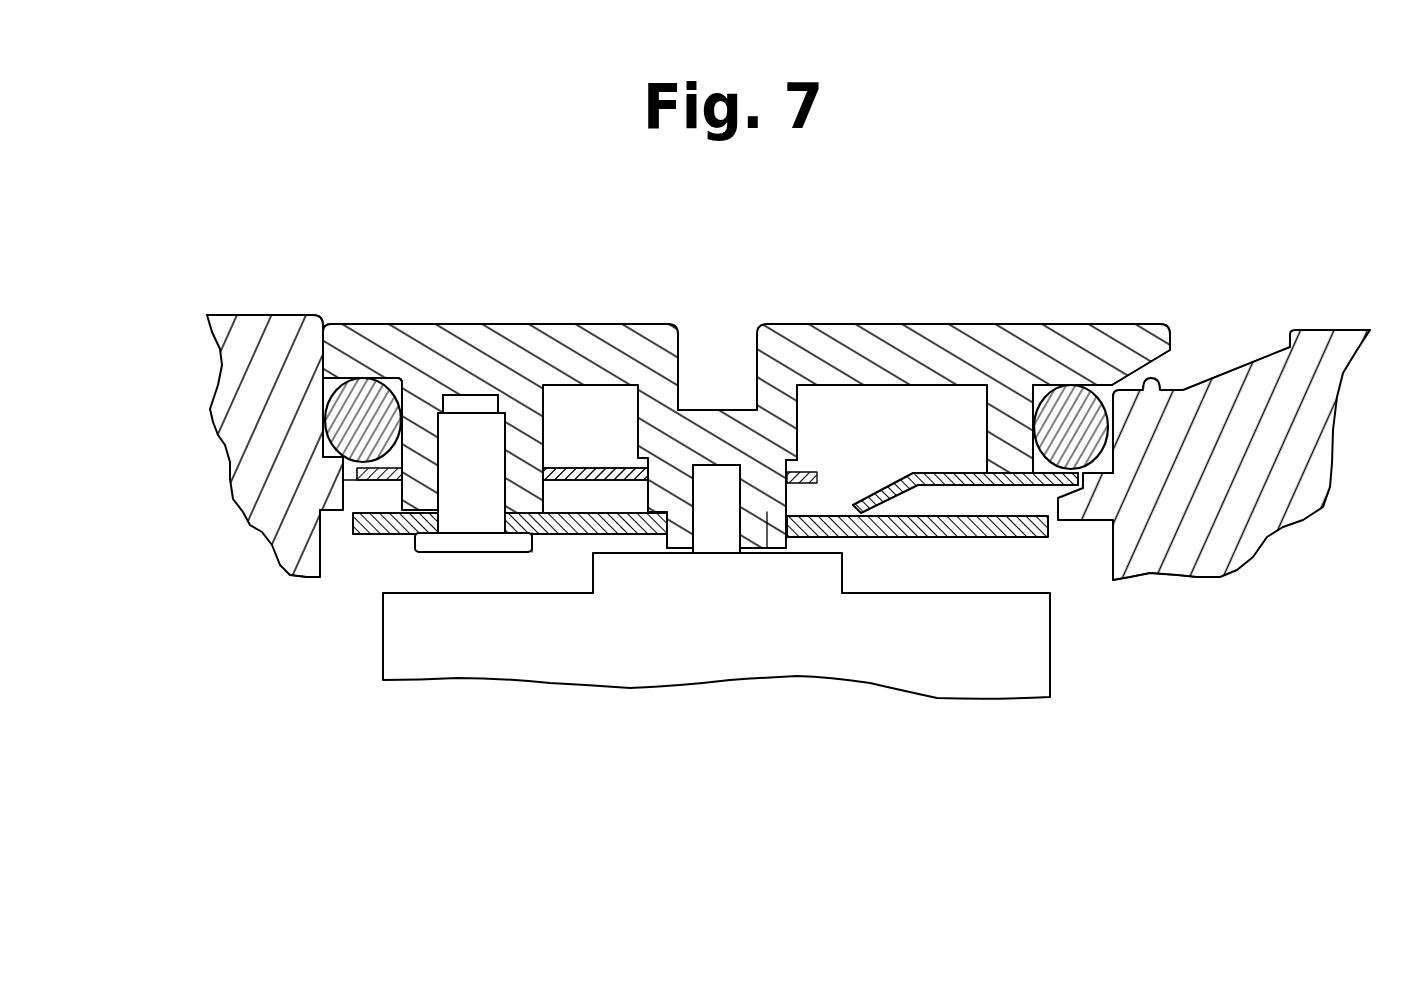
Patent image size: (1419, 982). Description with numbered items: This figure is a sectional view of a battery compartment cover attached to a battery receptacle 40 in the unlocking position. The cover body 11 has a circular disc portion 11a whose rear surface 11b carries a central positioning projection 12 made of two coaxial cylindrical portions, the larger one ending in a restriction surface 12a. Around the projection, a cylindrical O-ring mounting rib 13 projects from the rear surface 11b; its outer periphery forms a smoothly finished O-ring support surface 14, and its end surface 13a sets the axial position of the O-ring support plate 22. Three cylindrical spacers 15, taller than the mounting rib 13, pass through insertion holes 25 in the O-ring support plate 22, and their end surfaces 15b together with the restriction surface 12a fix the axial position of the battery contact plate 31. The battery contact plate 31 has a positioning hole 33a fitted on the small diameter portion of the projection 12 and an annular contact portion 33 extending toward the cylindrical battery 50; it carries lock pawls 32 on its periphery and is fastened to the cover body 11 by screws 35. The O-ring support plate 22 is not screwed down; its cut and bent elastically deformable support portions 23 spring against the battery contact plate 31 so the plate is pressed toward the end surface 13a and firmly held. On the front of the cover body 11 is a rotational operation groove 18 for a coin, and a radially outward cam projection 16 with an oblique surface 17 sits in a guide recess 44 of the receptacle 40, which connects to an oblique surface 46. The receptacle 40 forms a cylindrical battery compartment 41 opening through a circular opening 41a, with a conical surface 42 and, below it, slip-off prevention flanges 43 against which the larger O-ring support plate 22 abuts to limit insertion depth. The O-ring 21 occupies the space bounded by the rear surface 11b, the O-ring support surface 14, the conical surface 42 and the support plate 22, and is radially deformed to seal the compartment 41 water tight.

The cover body 11 is at (877, 324).
The circular disc portion 11a is at (593, 343).
The rear surface 11b is at (363, 380).
The positioning projection 12 is at (773, 440).
The restriction surface 12a is at (786, 556).
The O-ring mounting rib 13 is at (1003, 487).
The end surface of the O-ring mounting rib 13a is at (1037, 488).
The O-ring support surface 14 is at (403, 380).
The cylindrical spacers 15 is at (417, 503).
The end surfaces of the cylindrical spacers 15b is at (540, 540).
The cam projection 16 is at (1137, 343).
The oblique surface 17 is at (1190, 367).
The rotational operation groove 18 is at (753, 362).
The O-ring 21 is at (377, 403).
The O-ring support plate 22 is at (583, 485).
The elastically deformable support portions 23 is at (885, 495).
The insertion holes 25 is at (545, 473).
The battery contact plate 31 is at (623, 525).
The lock pawls 32 is at (337, 537).
The annular contact portion 33 is at (771, 549).
The positioning hole 33a is at (669, 542).
The screws 35 is at (457, 545).
The battery receptacle 40 is at (237, 365).
The battery compartment 41 is at (320, 577).
The circular opening 41a is at (333, 323).
The conical surface 42 is at (340, 443).
The slip-off prevention flanges 43 is at (1115, 522).
The guide recess 44 is at (1160, 392).
The oblique surface 46 is at (1340, 378).
The cylindrical battery 50 is at (1033, 665).